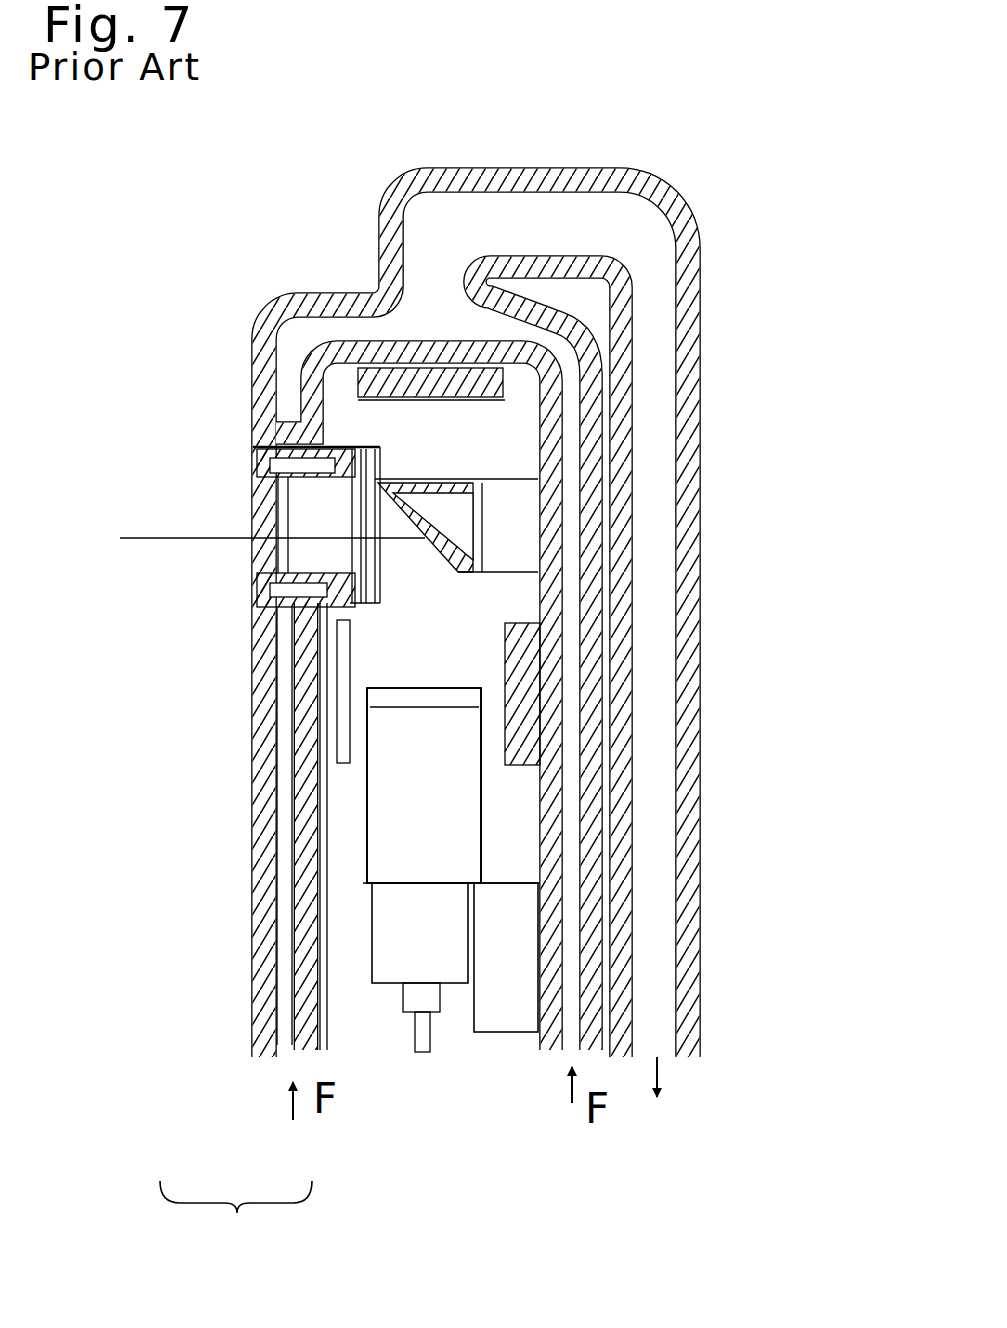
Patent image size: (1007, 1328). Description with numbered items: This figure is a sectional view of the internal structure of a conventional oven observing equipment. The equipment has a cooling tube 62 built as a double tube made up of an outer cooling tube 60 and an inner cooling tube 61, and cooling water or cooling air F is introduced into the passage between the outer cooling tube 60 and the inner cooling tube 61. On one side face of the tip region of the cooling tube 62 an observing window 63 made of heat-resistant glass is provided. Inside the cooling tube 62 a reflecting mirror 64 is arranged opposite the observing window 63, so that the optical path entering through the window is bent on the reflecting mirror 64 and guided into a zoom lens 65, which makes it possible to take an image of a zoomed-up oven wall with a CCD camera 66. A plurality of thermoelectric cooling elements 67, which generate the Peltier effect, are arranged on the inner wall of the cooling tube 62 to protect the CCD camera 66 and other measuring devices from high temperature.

The outer cooling tube 60 is at (260, 1037).
The inner cooling tube 61 is at (283, 1040).
The cooling tube 62 is at (236, 1222).
The observing window 63 is at (268, 503).
The reflecting mirror 64 is at (425, 540).
The zoom lens 65 is at (468, 843).
The CCD camera 66 is at (430, 943).
The thermoelectric cooling element 67 is at (405, 398).